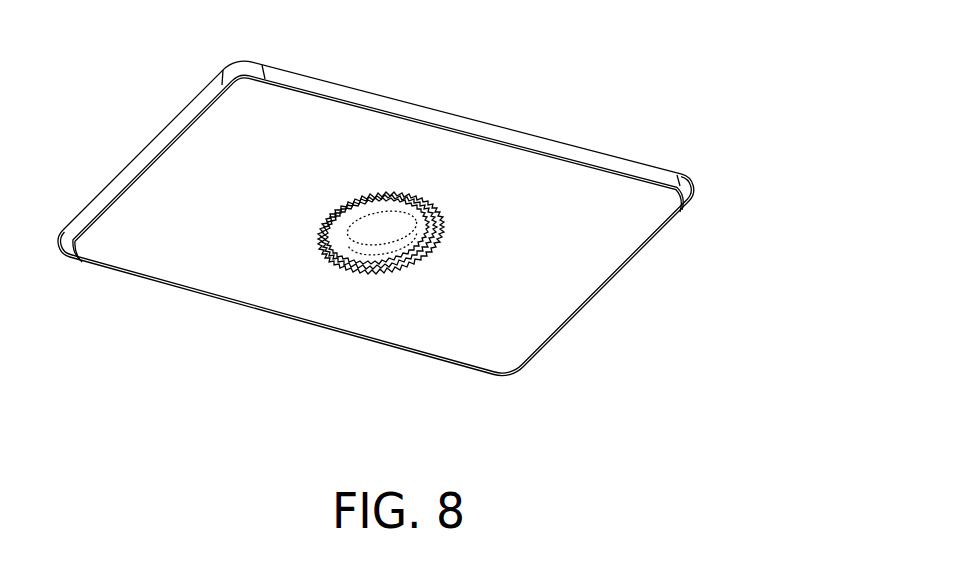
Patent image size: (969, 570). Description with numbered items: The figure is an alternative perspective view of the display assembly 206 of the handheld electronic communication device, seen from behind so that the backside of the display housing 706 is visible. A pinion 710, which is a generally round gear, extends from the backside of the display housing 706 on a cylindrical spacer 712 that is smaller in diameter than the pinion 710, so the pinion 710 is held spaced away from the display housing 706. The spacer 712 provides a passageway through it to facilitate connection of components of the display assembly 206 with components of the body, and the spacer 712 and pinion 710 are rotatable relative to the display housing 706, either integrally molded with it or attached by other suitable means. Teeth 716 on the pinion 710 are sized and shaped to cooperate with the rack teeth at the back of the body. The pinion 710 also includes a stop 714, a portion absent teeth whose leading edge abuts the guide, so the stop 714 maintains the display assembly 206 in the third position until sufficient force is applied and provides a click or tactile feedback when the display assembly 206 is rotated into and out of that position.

The display assembly 206 is at (683, 176).
The display housing 706 is at (583, 186).
The pinion 710 is at (408, 213).
The cylindrical spacer 712 is at (360, 235).
The stop 714 is at (340, 215).
The teeth 716 is at (353, 270).